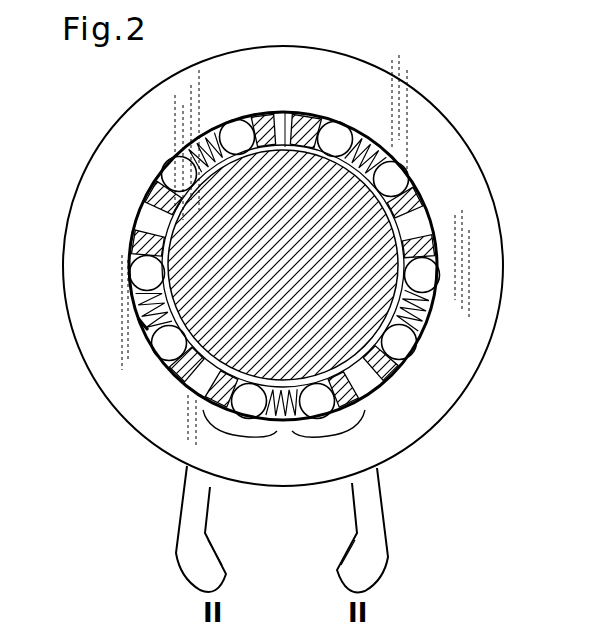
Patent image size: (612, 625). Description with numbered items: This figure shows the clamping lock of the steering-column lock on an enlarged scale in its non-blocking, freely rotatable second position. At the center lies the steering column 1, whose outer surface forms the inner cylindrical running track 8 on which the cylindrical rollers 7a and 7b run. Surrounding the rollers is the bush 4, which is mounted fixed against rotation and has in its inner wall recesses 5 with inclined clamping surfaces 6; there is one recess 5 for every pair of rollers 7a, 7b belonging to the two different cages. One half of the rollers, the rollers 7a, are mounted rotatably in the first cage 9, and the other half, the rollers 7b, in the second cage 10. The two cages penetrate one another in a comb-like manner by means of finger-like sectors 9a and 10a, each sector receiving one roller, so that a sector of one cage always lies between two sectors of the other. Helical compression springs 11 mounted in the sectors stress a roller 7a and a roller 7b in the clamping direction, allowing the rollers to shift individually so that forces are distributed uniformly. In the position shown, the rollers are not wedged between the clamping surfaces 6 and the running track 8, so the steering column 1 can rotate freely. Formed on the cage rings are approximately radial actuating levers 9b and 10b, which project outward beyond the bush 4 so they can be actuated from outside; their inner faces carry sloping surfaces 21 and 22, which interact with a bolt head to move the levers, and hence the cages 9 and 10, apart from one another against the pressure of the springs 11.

The steering column 1 is at (375, 237).
The bush 4 is at (480, 277).
The recess 5 is at (138, 303).
The clamping surface 6 is at (142, 325).
The cylindrical roller 7a is at (351, 136).
The cylindrical roller 7b is at (403, 178).
The running track 8 is at (285, 147).
The first cage 9 is at (180, 377).
The sector 9a is at (328, 438).
The actuating lever 9b is at (193, 517).
The second cage 10 is at (235, 260).
The sector 10a is at (240, 438).
The actuating lever 10b is at (378, 527).
The spring 11 is at (423, 308).
The sloping surface 21 is at (229, 554).
The sloping surface 22 is at (335, 554).